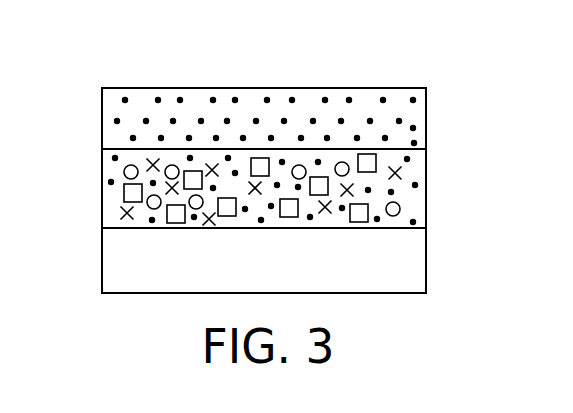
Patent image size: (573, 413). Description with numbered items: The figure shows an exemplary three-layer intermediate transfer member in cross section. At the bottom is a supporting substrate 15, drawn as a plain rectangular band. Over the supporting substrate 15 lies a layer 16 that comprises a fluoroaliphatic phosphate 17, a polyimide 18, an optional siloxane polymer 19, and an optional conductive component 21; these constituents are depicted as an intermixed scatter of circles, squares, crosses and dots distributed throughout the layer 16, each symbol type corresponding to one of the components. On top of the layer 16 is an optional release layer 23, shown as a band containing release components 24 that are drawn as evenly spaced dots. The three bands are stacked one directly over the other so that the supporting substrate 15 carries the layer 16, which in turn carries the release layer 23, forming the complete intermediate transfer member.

The supporting substrate 15 is at (102, 258).
The layer 16 is at (102, 183).
The fluoroaliphatic phosphate 17 is at (400, 209).
The polyimide 18 is at (124, 195).
The siloxane polymer 19 is at (403, 172).
The conductive component 21 is at (415, 185).
The release layer 23 is at (425, 113).
The release components 24 is at (158, 99).